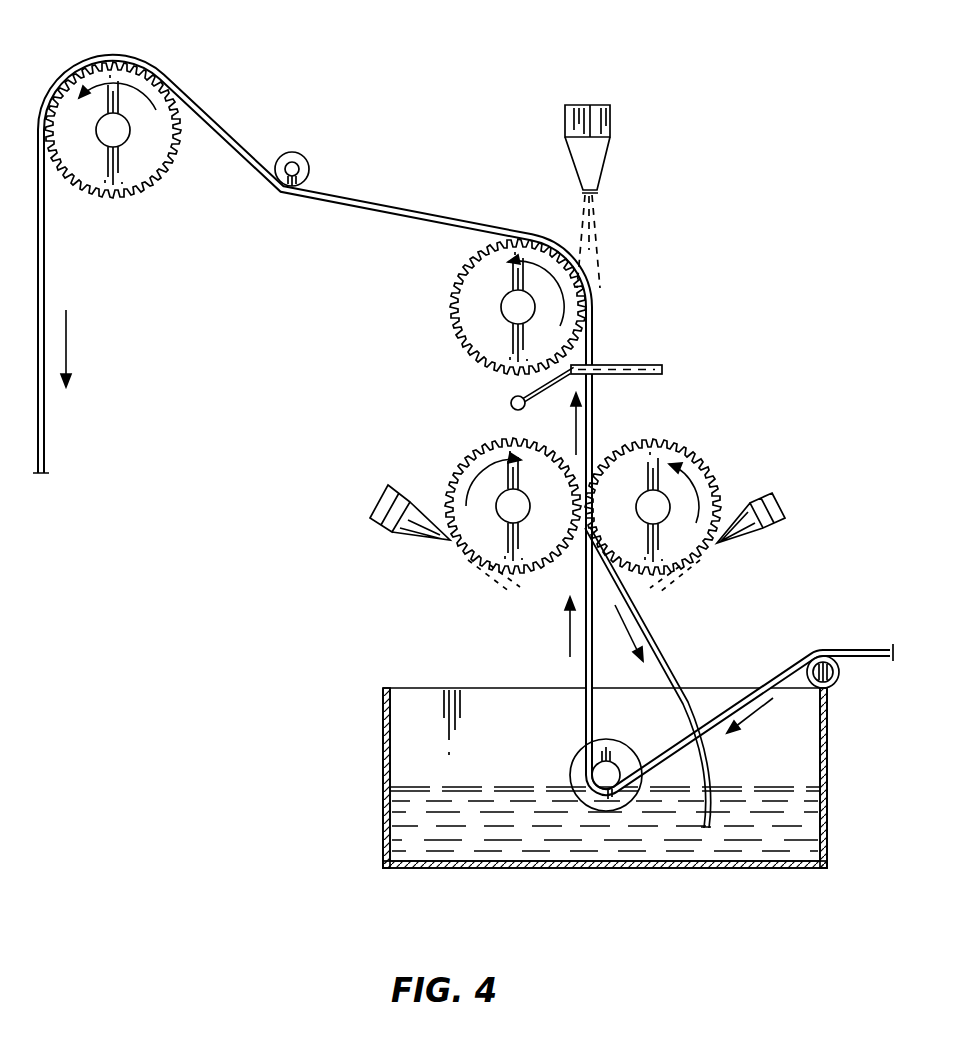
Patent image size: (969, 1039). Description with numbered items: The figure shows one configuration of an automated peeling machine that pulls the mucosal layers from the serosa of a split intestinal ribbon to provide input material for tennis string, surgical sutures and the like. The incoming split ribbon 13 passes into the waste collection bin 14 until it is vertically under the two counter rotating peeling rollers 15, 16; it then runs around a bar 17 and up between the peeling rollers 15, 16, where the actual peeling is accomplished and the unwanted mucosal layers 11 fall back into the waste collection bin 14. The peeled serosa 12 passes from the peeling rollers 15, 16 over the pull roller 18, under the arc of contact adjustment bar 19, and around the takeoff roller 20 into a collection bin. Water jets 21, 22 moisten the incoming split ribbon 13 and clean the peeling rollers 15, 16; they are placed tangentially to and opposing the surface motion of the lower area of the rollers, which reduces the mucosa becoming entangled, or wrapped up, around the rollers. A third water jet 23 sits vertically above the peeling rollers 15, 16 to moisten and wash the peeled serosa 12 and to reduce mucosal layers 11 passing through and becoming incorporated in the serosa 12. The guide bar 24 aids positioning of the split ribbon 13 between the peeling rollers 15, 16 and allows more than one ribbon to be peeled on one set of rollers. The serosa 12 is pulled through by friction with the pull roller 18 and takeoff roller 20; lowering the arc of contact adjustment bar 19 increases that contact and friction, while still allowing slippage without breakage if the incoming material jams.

The mucosal layers 11 is at (665, 647).
The serosa 12 is at (593, 430).
The incoming split ribbon 13 is at (860, 650).
The waste collection bin 14 is at (797, 762).
The peeling roller 15 is at (655, 452).
The peeling roller 16 is at (470, 465).
The bar 17 is at (612, 762).
The pull roller 18 is at (452, 302).
The arc of contact adjustment bar 19 is at (305, 158).
The takeoff roller 20 is at (160, 90).
The water jet 21 is at (768, 503).
The water jet 22 is at (393, 508).
The third water jet 23 is at (596, 128).
The guide bar 24 is at (662, 371).